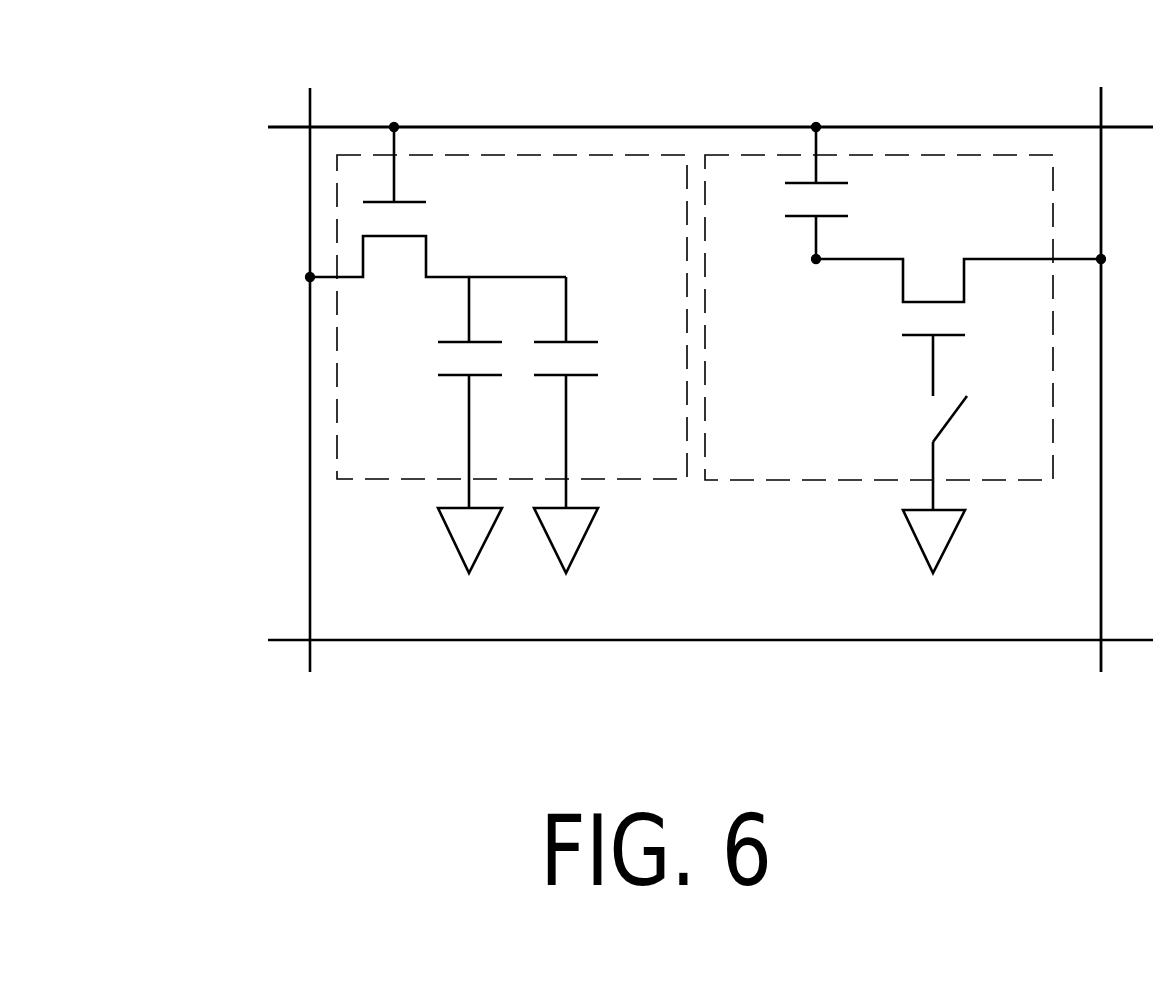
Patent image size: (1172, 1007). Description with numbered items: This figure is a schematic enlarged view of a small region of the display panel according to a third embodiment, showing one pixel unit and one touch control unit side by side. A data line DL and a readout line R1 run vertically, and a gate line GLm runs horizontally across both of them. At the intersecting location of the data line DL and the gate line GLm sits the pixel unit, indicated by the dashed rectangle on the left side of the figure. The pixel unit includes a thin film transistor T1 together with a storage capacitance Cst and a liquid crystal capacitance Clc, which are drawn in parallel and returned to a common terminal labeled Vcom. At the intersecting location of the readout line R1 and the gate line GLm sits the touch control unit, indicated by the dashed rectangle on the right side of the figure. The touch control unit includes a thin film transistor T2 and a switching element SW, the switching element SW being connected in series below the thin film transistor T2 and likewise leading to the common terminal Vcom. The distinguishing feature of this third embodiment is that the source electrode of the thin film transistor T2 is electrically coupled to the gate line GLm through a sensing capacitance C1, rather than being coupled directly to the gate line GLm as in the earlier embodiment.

The data line DL is at (312, 348).
The readout line R1 is at (1093, 408).
The gate line GLm is at (650, 126).
The thin film transistor T1 is at (436, 204).
The thin film transistor T2 is at (961, 295).
The sensing capacitance C1 is at (789, 195).
The liquid crystal capacitance Clc is at (430, 392).
The storage capacitance Cst is at (603, 392).
The switching element SW is at (904, 447).
The common voltage terminal Vcom is at (700, 566).